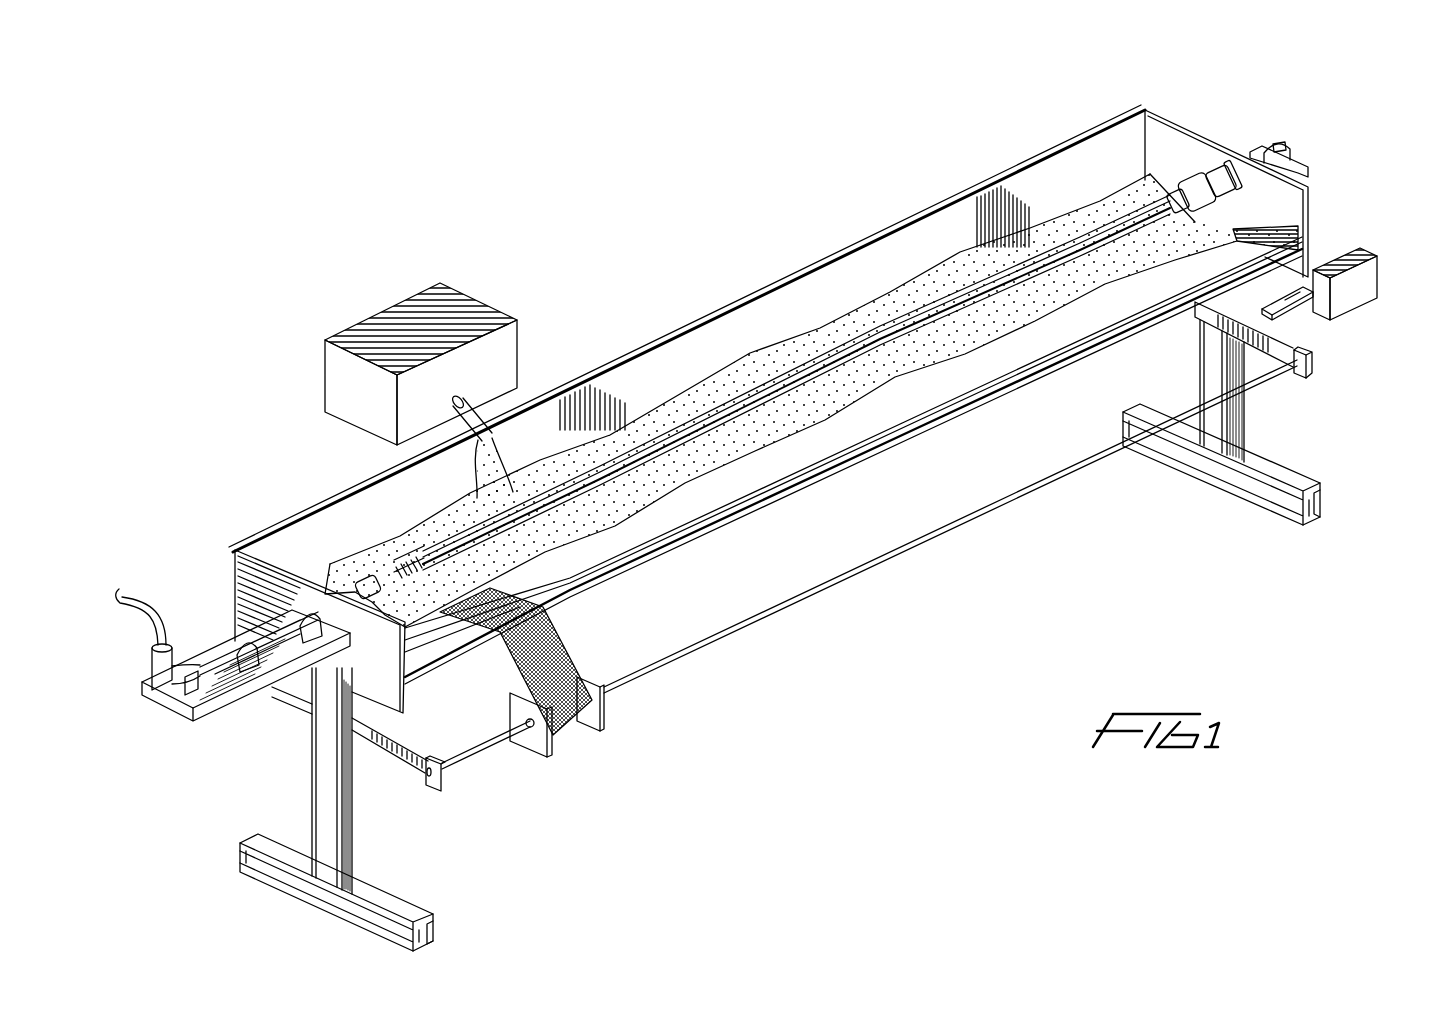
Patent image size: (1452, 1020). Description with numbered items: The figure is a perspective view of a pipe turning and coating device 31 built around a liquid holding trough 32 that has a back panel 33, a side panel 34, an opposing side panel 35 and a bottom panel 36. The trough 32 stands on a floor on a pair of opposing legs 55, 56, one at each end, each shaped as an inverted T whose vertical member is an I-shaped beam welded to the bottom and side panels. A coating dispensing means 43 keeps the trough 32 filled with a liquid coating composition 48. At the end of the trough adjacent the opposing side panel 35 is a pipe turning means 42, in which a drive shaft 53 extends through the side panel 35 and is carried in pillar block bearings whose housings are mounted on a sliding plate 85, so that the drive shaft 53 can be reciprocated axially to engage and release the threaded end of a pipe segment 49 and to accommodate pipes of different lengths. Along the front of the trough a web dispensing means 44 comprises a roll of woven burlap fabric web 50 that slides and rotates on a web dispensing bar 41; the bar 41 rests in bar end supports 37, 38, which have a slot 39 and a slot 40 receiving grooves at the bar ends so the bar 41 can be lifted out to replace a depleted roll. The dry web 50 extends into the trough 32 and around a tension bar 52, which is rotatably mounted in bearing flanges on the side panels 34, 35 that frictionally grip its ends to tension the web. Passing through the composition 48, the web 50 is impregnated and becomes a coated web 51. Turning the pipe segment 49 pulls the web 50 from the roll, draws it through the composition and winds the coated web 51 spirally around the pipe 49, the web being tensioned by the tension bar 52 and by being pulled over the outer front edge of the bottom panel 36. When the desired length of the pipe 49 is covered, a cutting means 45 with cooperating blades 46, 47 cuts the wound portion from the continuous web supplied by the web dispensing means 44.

The pipe turning and coating device 31 is at (731, 252).
The liquid holding trough 32 is at (656, 335).
The back panel 33 is at (794, 308).
The side panel 34 is at (1172, 137).
The opposing side panel 35 is at (235, 596).
The bottom panel 36 is at (706, 497).
The bar end support 37 is at (446, 772).
The bar end support 38 is at (1316, 363).
The slot 39 is at (428, 757).
The slot 40 is at (1308, 352).
The web dispensing bar 41 is at (657, 665).
The pipe turning means 42 is at (233, 688).
The coating dispensing means 43 is at (400, 328).
The web dispensing means 44 is at (573, 752).
The cutting means 45 is at (1369, 284).
The blade 46 is at (1288, 309).
The blade 47 is at (1290, 303).
The liquid coating composition 48 is at (806, 408).
The pipe segment 49 is at (868, 353).
The woven burlap fabric web 50 is at (558, 655).
The coated web 51 is at (421, 553).
The tension bar 52 is at (752, 385).
The drive shaft 53 is at (571, 603).
The leg 55 is at (354, 840).
The leg 56 is at (1246, 434).
The sliding plate 85 is at (223, 677).